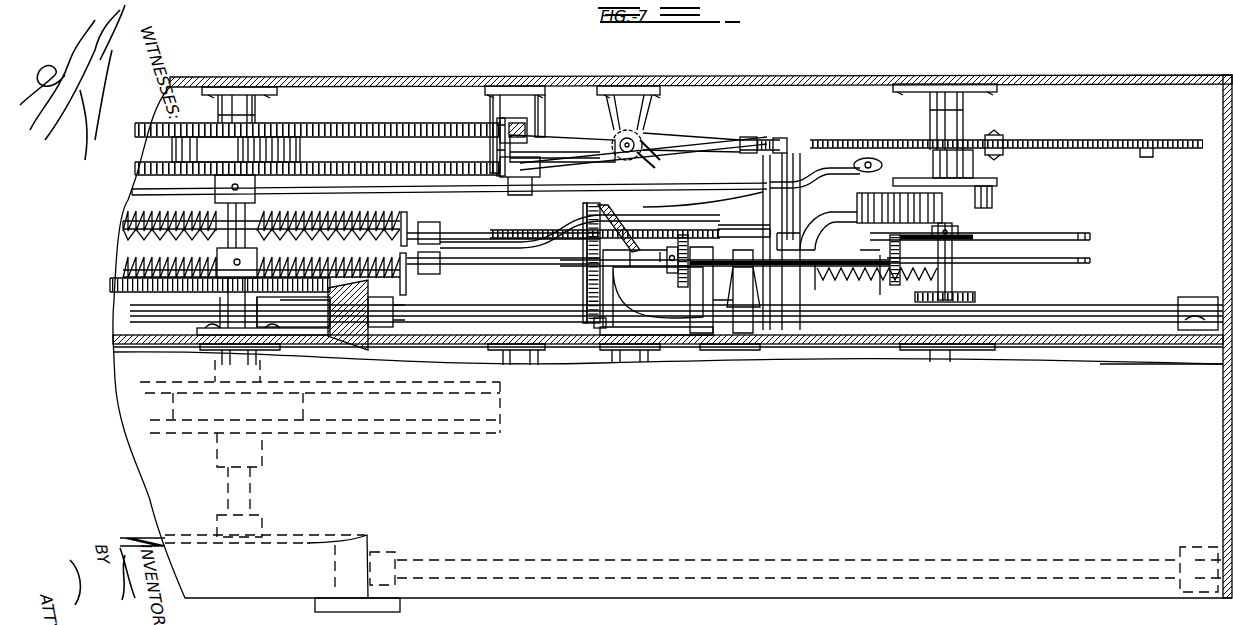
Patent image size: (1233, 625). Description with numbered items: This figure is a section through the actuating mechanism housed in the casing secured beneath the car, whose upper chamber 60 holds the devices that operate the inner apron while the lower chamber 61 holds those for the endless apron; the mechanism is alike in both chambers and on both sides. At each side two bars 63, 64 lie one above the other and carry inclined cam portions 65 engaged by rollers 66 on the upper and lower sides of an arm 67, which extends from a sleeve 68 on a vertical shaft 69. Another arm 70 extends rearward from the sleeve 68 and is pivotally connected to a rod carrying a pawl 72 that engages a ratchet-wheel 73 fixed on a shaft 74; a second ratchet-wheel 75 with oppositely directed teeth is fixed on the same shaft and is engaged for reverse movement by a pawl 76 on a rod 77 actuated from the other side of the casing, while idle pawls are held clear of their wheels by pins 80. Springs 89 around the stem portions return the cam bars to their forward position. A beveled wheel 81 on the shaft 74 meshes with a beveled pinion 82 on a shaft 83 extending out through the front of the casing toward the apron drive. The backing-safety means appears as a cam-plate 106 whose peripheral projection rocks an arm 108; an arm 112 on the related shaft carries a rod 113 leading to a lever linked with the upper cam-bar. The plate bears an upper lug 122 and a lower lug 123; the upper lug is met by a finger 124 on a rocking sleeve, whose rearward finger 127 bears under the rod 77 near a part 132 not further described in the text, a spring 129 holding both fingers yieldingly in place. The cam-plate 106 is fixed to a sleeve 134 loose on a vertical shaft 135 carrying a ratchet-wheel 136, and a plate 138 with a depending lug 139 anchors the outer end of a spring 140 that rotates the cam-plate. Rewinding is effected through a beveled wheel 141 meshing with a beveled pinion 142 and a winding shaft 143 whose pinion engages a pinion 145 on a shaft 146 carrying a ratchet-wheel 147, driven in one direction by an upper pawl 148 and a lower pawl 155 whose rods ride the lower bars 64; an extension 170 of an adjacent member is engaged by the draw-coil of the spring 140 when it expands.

The upper chamber 60 is at (1150, 240).
The lower chamber 61 is at (1161, 353).
The upper bar 63 is at (498, 230).
The lower bar 64 is at (475, 266).
The cam-shaped or inclined portion 65 is at (662, 230).
The roller 66 is at (433, 224).
The arm 67 is at (560, 218).
The sleeve 68 is at (790, 178).
The vertical shaft 69 is at (787, 138).
The arm 70 is at (650, 172).
The pawl 72 is at (525, 176).
The ratchet-wheel 73 is at (437, 162).
The shaft 74 is at (250, 218).
The ratchet-wheel 75 is at (400, 123).
The pawl 76 is at (499, 93).
The rod 77 is at (515, 118).
The pin 80 is at (493, 104).
The beveled wheel 81 is at (198, 292).
The beveled pinion 82 is at (358, 340).
The shaft 83 is at (545, 305).
The spring 89 is at (365, 215).
The cam-plate 106 is at (1070, 140).
The arm 108 is at (978, 138).
The arm 112 is at (930, 165).
The rod 113 is at (150, 192).
The lug 122 is at (762, 122).
The lug 123 is at (1148, 157).
The finger 124 is at (700, 135).
The finger 127 is at (588, 145).
The spring 129 is at (645, 142).
The link 132 is at (545, 136).
The sleeve 134 is at (975, 163).
The vertical shaft 135 is at (955, 270).
The ratchet-wheel 136 is at (975, 296).
The plate 138 is at (997, 181).
The depending lug 139 is at (992, 194).
The spring 140 is at (862, 196).
The rod 141 is at (990, 240).
The beveled pinion 142 is at (900, 262).
The winding shaft 143 is at (838, 270).
The pinion 145 is at (686, 300).
The shaft 146 is at (648, 268).
The ratchet-wheel 147 is at (588, 300).
The spring yielding pawl 148 is at (613, 260).
The pawl 155 is at (600, 333).
The extension 170 is at (825, 214).